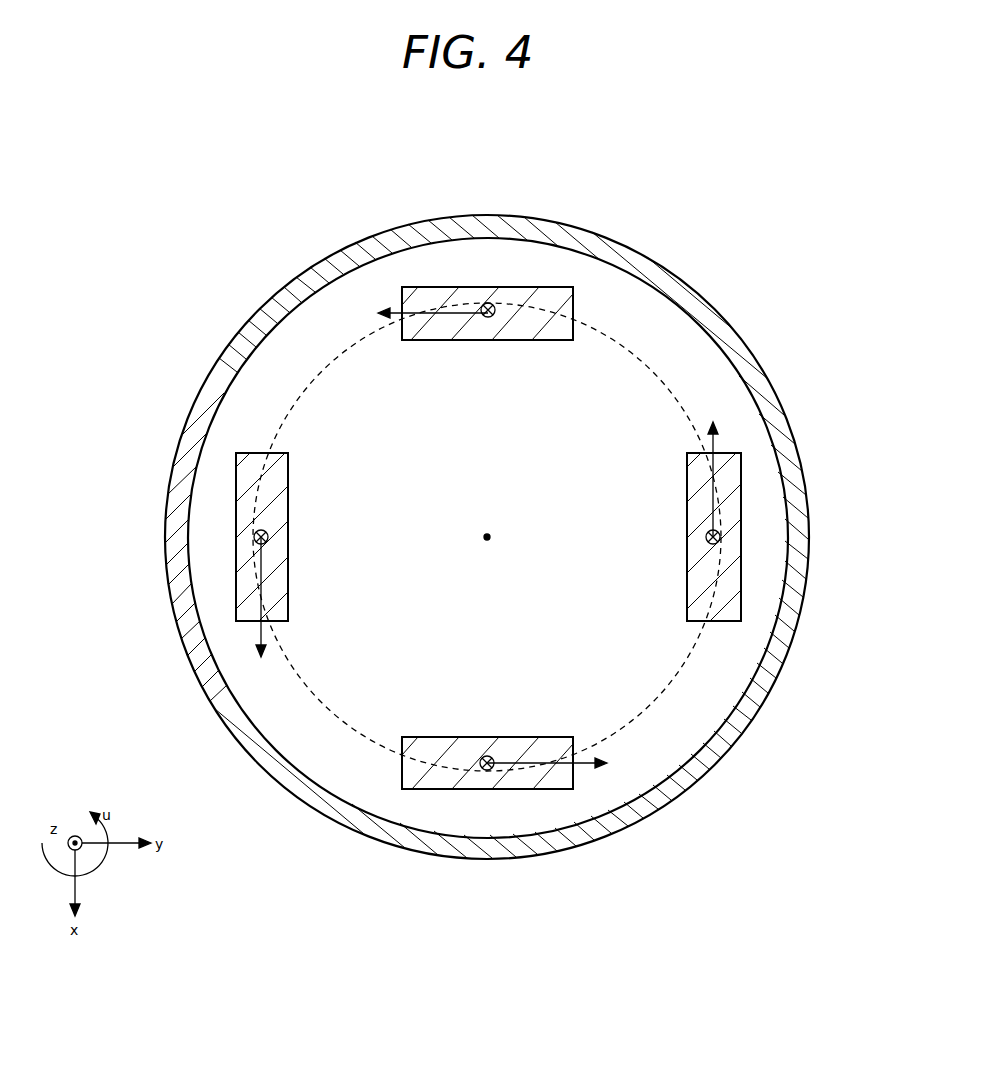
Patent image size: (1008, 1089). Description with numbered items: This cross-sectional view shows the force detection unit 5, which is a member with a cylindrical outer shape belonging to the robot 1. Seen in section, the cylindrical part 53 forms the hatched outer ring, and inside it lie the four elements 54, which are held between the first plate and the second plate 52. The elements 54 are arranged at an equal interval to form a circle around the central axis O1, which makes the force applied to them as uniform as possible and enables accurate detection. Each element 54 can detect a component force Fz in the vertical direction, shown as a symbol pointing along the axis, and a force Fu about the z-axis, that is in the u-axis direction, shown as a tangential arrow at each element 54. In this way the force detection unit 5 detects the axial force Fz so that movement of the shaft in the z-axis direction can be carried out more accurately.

The robot 1 is at (178, 214).
The force detection unit 5 is at (678, 244).
The second plate 52 is at (345, 318).
The cylindrical part 53 is at (790, 432).
The element 54 is at (250, 478).
The axis O1 is at (487, 537).
The force Fu is at (392, 305).
The component force Fz is at (488, 300).